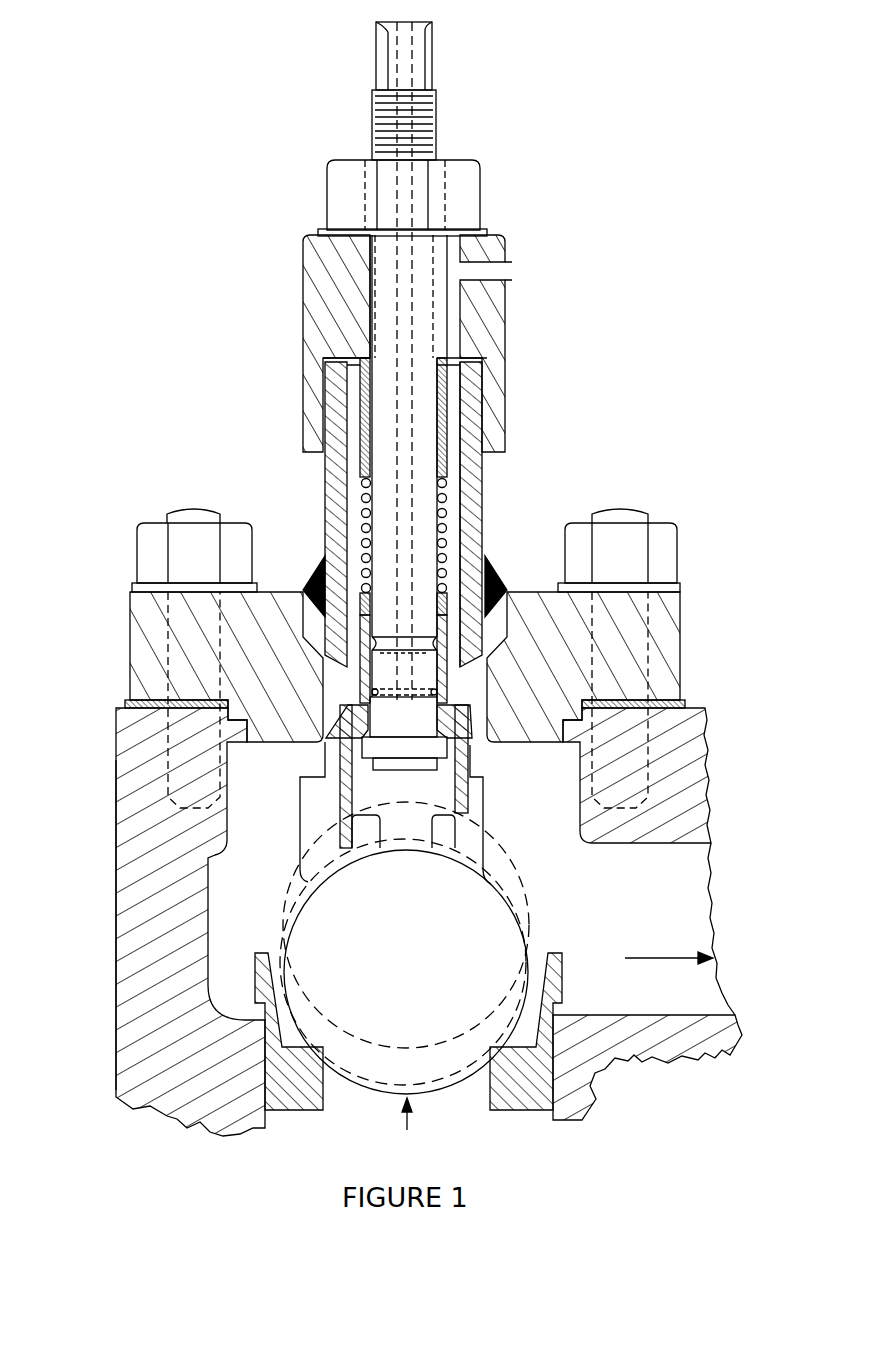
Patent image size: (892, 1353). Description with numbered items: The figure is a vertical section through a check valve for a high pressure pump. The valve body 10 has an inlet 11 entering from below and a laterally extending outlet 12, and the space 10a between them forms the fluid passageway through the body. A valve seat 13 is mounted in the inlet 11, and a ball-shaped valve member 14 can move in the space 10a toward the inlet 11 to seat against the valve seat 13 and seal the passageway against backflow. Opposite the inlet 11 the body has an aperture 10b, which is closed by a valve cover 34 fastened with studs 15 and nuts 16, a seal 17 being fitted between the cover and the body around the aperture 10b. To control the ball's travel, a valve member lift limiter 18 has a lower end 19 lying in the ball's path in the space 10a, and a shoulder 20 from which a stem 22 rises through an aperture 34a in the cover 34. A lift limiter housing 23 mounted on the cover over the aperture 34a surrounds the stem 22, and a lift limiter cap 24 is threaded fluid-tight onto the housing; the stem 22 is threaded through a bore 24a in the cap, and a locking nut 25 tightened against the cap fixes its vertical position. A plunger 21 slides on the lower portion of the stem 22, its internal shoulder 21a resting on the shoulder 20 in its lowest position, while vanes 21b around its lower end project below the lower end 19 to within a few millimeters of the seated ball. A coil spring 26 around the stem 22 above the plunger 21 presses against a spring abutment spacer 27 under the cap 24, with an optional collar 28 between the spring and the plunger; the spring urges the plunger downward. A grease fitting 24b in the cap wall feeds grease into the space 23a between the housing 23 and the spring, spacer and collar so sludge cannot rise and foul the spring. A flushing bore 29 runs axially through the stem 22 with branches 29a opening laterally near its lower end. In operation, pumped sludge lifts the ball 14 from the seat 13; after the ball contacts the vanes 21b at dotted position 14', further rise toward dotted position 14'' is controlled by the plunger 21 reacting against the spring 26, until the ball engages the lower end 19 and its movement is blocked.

The valve body 10 is at (130, 1090).
The space 10a is at (232, 905).
The aperture 10b is at (563, 745).
The inlet 11 is at (362, 1108).
The outlet 12 is at (665, 907).
The valve seat 13 is at (300, 1105).
The valve member 14 is at (440, 972).
The dotted line position of ball 14' is at (458, 925).
The dotted line position of ball 14'' is at (379, 962).
The studs 15 is at (620, 513).
The nuts 16 is at (665, 540).
The seal 17 is at (672, 705).
The valve member lift limiter 18 is at (432, 720).
The lower end of lift limiter 19 is at (385, 766).
The shoulder 20 is at (377, 752).
The plunger 21 is at (358, 742).
The internal shoulder 21a is at (470, 810).
The vanes 21b is at (313, 830).
The stem 22 is at (388, 312).
The lift limiter housing 23 is at (470, 498).
The space 23a is at (450, 452).
The lift limiter cap 24 is at (318, 262).
The bore 24a is at (370, 346).
The grease fitting 24b is at (500, 272).
The locking nut 25 is at (458, 175).
The coil spring 26 is at (445, 533).
The spring abutment spacer 27 is at (447, 395).
The collar 28 is at (325, 578).
The flushing bore 29 is at (403, 72).
The branches 29a is at (420, 680).
The valve cover 34 is at (672, 612).
The aperture 34a is at (493, 593).